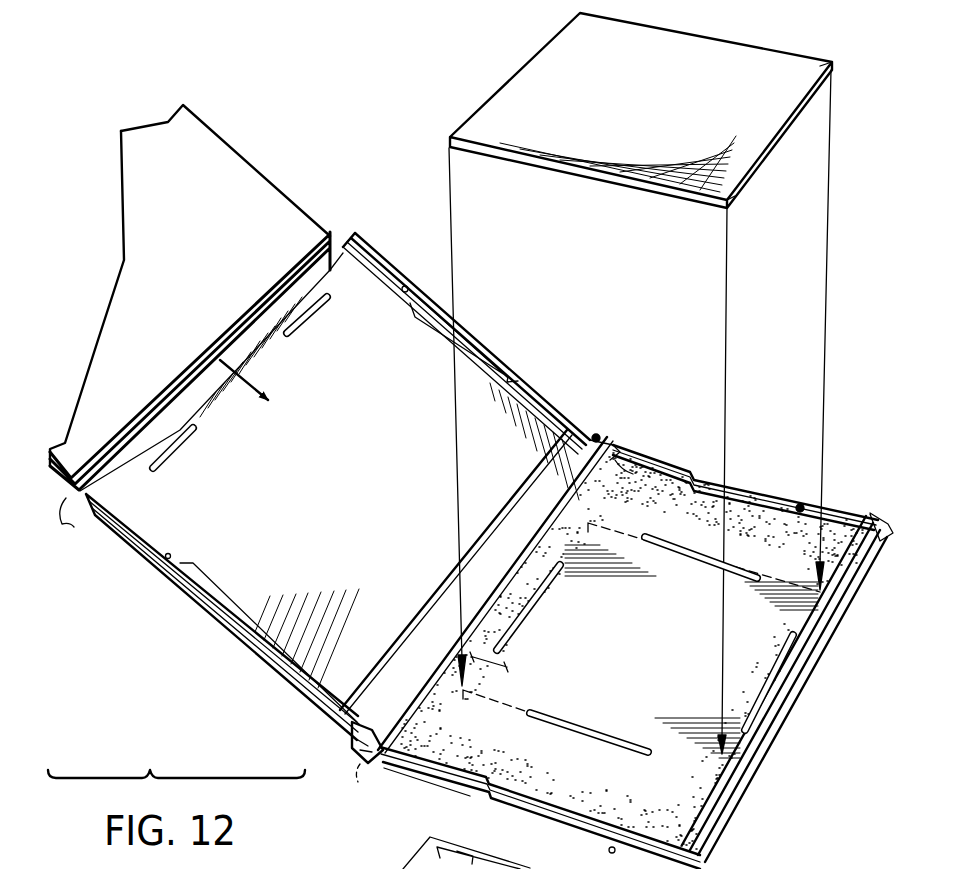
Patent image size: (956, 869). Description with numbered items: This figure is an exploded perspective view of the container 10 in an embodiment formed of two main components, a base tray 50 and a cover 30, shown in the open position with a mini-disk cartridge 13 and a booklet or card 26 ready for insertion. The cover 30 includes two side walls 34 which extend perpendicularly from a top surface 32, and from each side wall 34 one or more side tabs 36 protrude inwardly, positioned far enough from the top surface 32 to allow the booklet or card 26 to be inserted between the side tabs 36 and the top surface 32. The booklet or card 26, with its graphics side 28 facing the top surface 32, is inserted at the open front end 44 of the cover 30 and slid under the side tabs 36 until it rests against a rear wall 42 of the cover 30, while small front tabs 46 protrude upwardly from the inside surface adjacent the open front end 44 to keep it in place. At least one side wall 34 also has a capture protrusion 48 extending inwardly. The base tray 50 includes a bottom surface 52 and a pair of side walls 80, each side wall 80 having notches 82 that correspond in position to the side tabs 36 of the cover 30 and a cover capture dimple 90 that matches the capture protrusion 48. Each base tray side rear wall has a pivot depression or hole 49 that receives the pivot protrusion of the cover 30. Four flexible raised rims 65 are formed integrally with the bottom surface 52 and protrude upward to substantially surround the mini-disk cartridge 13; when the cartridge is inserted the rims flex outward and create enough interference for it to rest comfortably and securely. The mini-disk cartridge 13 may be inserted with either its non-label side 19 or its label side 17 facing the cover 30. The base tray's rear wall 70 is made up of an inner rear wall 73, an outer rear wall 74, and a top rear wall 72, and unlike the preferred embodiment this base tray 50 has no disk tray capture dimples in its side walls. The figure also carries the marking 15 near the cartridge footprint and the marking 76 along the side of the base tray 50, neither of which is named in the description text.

The container 10 is at (354, 78).
The mini-disk cartridge 13 is at (500, 96).
The box footprint arrow 15 is at (641, 617).
The label side 17 is at (776, 148).
The non-label side 19 is at (798, 62).
The booklet or card 26 is at (244, 166).
The graphics side 28 is at (196, 397).
The cover 30 is at (390, 246).
The top surface 32 is at (348, 501).
The side wall 34 is at (524, 386).
The side tab 36 is at (425, 333).
The rear wall 42 is at (414, 596).
The open front end 44 is at (350, 234).
The front tab 46 is at (308, 320).
The capture protrusion 48 is at (409, 284).
The pivot depression or hole 49 is at (368, 783).
The base tray 50 is at (426, 795).
The bottom surface 52 is at (654, 653).
The raised rim 65 is at (542, 611).
The rear wall 70 is at (620, 448).
The top rear wall 72 is at (598, 432).
The inner rear wall 73 is at (644, 466).
The outer rear wall 74 is at (349, 725).
The side rail 76 is at (790, 696).
The side wall 80 is at (842, 516).
The notch 82 is at (752, 492).
The cover capture dimple 90 is at (799, 502).